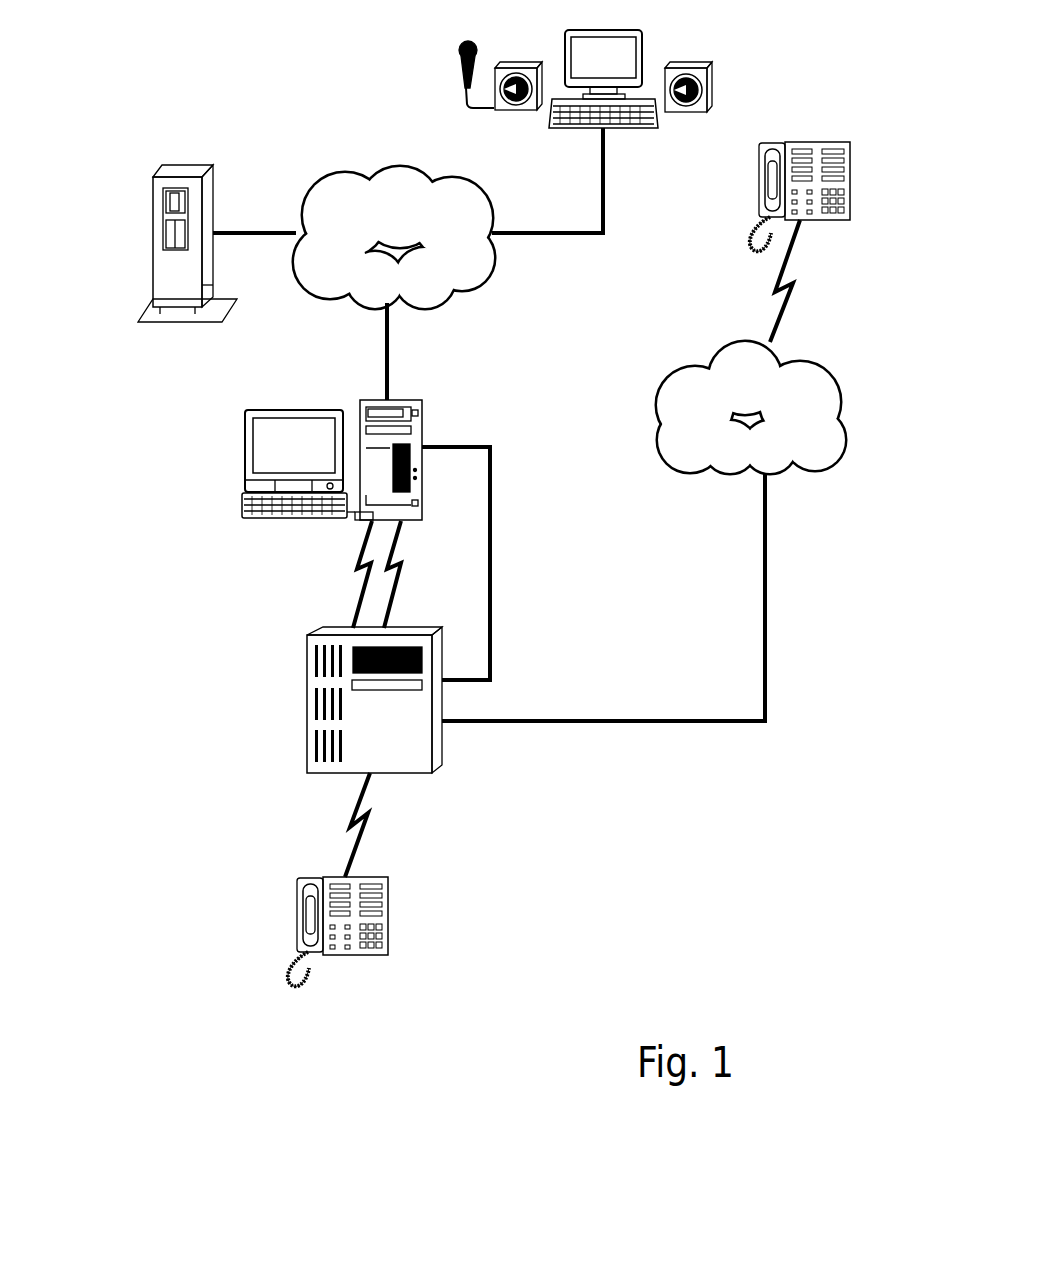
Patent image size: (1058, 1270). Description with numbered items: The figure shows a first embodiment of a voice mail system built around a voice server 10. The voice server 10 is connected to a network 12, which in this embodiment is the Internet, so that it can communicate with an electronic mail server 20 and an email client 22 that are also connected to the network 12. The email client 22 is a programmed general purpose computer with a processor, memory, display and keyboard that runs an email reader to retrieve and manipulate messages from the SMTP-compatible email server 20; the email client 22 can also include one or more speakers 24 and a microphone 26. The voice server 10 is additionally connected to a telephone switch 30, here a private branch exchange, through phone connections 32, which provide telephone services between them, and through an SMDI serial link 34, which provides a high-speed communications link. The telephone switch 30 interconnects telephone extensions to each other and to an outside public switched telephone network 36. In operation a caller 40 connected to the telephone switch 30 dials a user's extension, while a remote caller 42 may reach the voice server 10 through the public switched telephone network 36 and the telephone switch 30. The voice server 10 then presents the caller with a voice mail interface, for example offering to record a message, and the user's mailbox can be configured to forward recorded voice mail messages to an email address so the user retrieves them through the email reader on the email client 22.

The voice server 10 is at (420, 400).
The network 12 is at (397, 170).
The electronic mail server 20 is at (152, 243).
The email client 22 is at (648, 35).
The speakers 24 is at (713, 90).
The microphone 26 is at (460, 47).
The telephone switch 30 is at (307, 707).
The phone connections 32 is at (312, 600).
The SMDI serial link 34 is at (493, 642).
The public switched telephone network 36 is at (840, 432).
The caller 40 is at (372, 955).
The remote caller 42 is at (833, 220).